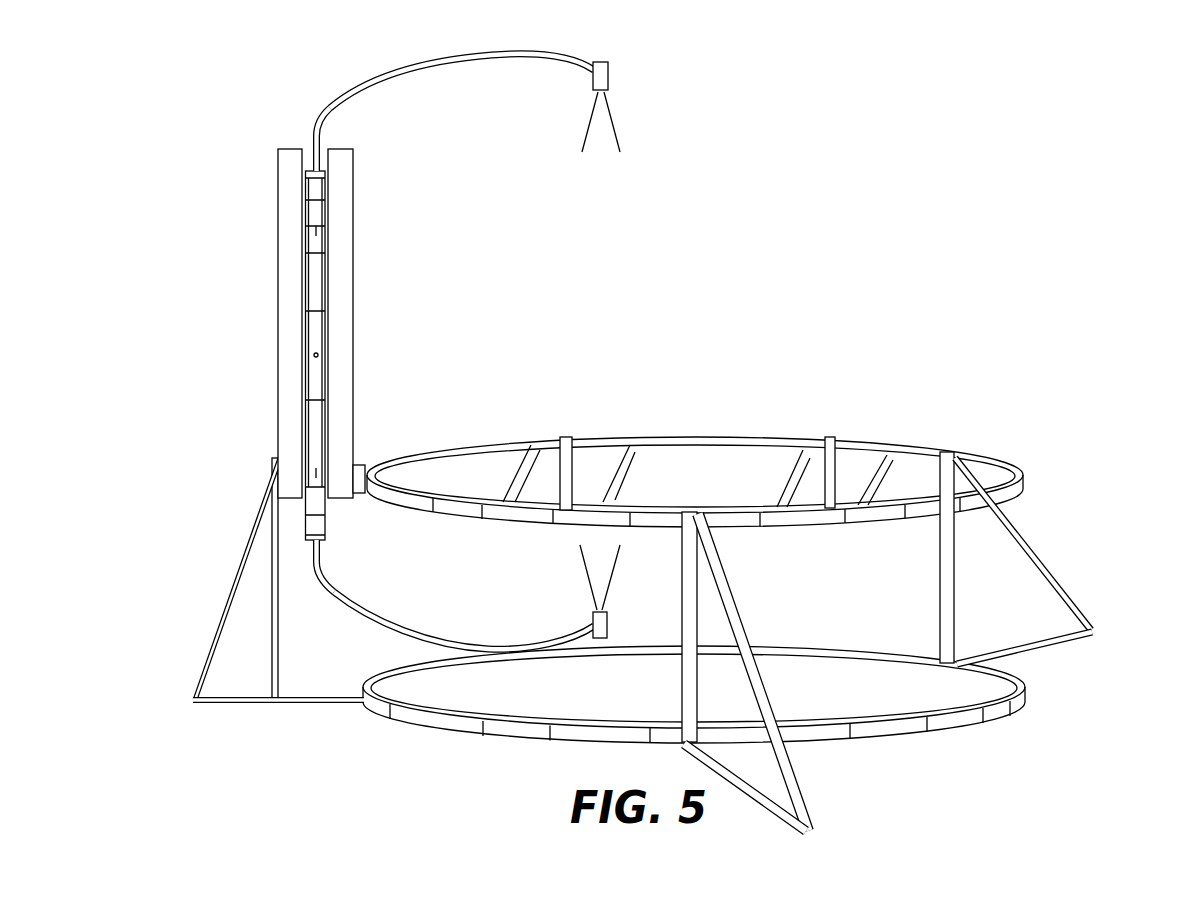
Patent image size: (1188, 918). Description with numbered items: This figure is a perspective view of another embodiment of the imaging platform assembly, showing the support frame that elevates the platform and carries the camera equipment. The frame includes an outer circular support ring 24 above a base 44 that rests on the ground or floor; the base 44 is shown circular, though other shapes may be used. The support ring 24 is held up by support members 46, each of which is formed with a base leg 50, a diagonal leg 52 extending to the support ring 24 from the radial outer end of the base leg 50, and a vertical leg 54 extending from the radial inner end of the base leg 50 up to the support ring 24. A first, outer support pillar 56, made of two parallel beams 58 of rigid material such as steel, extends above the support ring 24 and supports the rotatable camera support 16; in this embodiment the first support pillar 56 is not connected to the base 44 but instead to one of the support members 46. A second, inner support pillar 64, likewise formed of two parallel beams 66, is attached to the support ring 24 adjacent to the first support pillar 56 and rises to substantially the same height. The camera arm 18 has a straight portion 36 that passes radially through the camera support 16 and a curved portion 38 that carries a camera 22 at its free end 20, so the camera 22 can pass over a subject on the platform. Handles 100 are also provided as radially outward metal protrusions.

The rotatable camera support 16 is at (304, 355).
The camera arm 18 is at (411, 362).
The free end 20 is at (592, 350).
The camera 22 is at (610, 77).
The outer circular ring 24 is at (903, 441).
The straight portion 36 is at (308, 145).
The curved portion 38 is at (397, 80).
The base 44 is at (968, 725).
The support members 46 is at (632, 641).
The base leg 50 is at (298, 706).
The diagonal leg 52 is at (228, 602).
The vertical leg 54 is at (280, 678).
The first support pillar 56 is at (236, 323).
The parallel beams 58 is at (277, 290).
The second support pillar 64 is at (398, 323).
The parallel beams 66 is at (354, 272).
The handles 100 is at (316, 224).